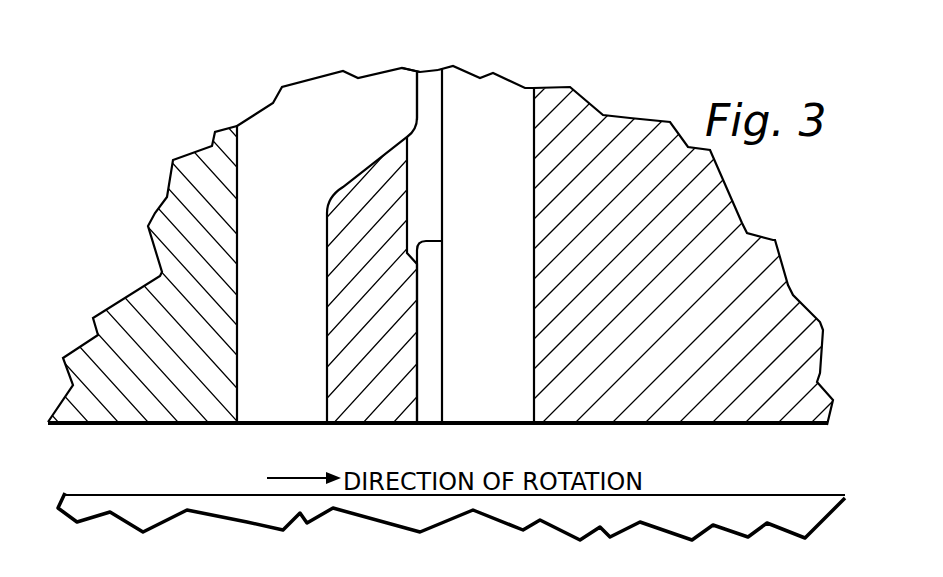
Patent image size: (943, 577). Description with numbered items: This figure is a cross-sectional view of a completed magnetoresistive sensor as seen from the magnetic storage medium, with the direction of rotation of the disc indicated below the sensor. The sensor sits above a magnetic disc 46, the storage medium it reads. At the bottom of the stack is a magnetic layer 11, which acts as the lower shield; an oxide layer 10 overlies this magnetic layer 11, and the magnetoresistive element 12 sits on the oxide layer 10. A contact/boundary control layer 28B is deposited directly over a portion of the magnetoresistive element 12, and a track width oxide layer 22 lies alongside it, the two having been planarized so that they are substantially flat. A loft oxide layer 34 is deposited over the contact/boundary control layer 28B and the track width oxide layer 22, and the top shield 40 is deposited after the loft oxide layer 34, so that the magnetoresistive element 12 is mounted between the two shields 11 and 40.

The oxide layer 10 is at (497, 205).
The magnetic layer 11 is at (617, 400).
The magnetoresistive element 12 is at (430, 330).
The track width oxide layer 22 is at (362, 238).
The contact/boundary control layer 28B is at (426, 72).
The loft oxide layer 34 is at (340, 142).
The top shield 40 is at (185, 197).
The magnetic disc 46 is at (140, 494).